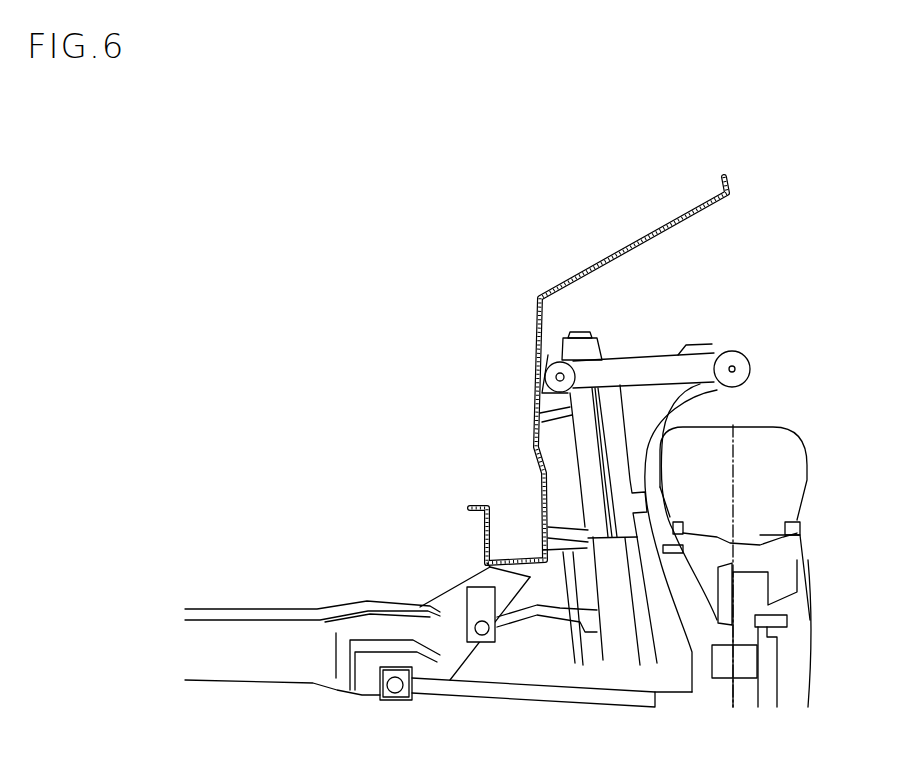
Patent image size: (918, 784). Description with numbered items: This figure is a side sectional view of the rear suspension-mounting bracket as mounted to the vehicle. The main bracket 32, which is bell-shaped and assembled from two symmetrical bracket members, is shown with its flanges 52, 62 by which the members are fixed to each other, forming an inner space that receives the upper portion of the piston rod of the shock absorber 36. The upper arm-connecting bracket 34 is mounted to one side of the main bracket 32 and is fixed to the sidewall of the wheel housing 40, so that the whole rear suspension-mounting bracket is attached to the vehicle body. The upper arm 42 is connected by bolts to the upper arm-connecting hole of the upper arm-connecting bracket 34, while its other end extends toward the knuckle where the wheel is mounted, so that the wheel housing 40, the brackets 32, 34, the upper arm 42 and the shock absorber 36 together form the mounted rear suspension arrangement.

The wheel housing 40 is at (615, 250).
The upper arm-connecting bracket 34 is at (563, 352).
The main bracket 32 is at (610, 400).
The upper arm 42 is at (735, 358).
The flange 52 is at (493, 564).
The flange 62 is at (567, 460).
The shock absorber 36 is at (630, 580).